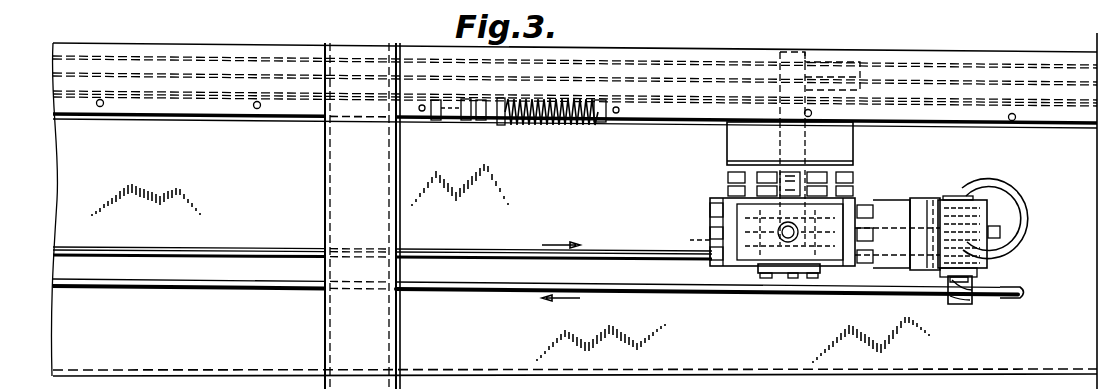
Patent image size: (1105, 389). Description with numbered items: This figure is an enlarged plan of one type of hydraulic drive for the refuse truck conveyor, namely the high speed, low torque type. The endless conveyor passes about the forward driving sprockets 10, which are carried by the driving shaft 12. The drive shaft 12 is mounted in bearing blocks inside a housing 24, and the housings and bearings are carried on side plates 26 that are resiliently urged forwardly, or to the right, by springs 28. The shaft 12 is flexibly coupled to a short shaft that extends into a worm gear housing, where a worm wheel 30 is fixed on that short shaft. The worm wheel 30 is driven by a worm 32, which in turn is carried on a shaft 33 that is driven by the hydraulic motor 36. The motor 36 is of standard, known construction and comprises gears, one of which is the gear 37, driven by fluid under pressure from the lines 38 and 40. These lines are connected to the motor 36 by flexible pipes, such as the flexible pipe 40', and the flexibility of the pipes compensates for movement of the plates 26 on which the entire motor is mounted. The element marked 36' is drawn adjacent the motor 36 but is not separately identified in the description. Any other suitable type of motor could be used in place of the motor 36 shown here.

The forward driving sprockets 10 is at (846, 44).
The driving shaft 12 is at (862, 89).
The housing 24 is at (835, 140).
The side plates 26 is at (652, 102).
The springs 28 is at (526, 124).
The worm wheel 30 is at (708, 240).
The worm 32 is at (800, 268).
The shaft 33 is at (886, 226).
The hydraulic motor 36 is at (957, 215).
The ring 36' is at (1007, 213).
The gear 37 is at (1002, 233).
The line 38 is at (527, 237).
The line 40 is at (538, 302).
The flexible pipe 40' is at (985, 301).